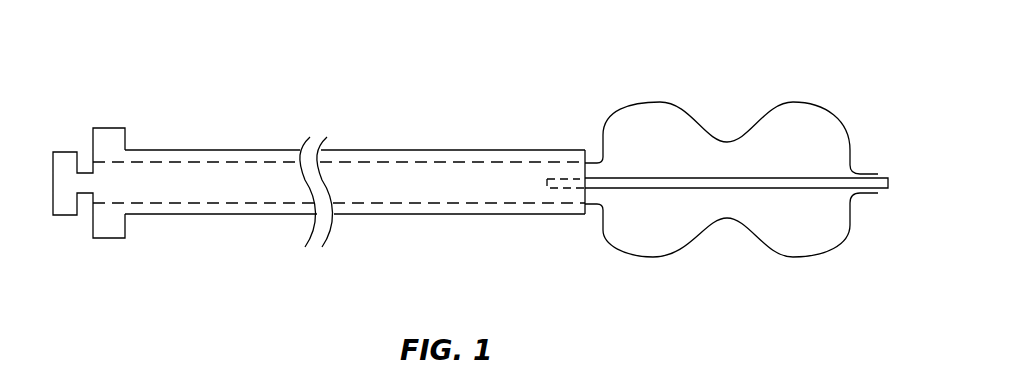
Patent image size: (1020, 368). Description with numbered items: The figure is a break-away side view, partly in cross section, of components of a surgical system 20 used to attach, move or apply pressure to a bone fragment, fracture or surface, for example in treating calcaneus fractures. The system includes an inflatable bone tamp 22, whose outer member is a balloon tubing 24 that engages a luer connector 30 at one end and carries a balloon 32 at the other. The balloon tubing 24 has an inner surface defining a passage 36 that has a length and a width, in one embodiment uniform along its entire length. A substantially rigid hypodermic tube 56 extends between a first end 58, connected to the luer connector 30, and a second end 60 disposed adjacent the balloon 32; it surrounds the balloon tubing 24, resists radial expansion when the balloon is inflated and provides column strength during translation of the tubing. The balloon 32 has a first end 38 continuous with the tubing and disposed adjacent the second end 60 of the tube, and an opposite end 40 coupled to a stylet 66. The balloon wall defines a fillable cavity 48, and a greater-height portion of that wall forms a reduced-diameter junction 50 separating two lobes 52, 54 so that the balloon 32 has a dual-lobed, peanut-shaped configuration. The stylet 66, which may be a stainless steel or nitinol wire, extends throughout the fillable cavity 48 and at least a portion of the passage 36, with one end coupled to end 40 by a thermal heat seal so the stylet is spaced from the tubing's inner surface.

The surgical system 20 is at (462, 169).
The inflatable bone tamp 22 is at (339, 152).
The balloon tubing 24 is at (392, 205).
The luer connector 30 is at (70, 112).
The balloon 32 is at (720, 186).
The passage 36 is at (452, 177).
The first end 38 is at (598, 207).
The end 40 is at (877, 176).
The fillable cavity 48 is at (812, 194).
The reduced-diameter junction 50 is at (727, 140).
The lobe 52 is at (660, 103).
The lobe 54 is at (793, 102).
The hypodermic tube 56 is at (378, 135).
The first end 58 is at (135, 150).
The second end 60 is at (574, 150).
The stylet 66 is at (729, 214).